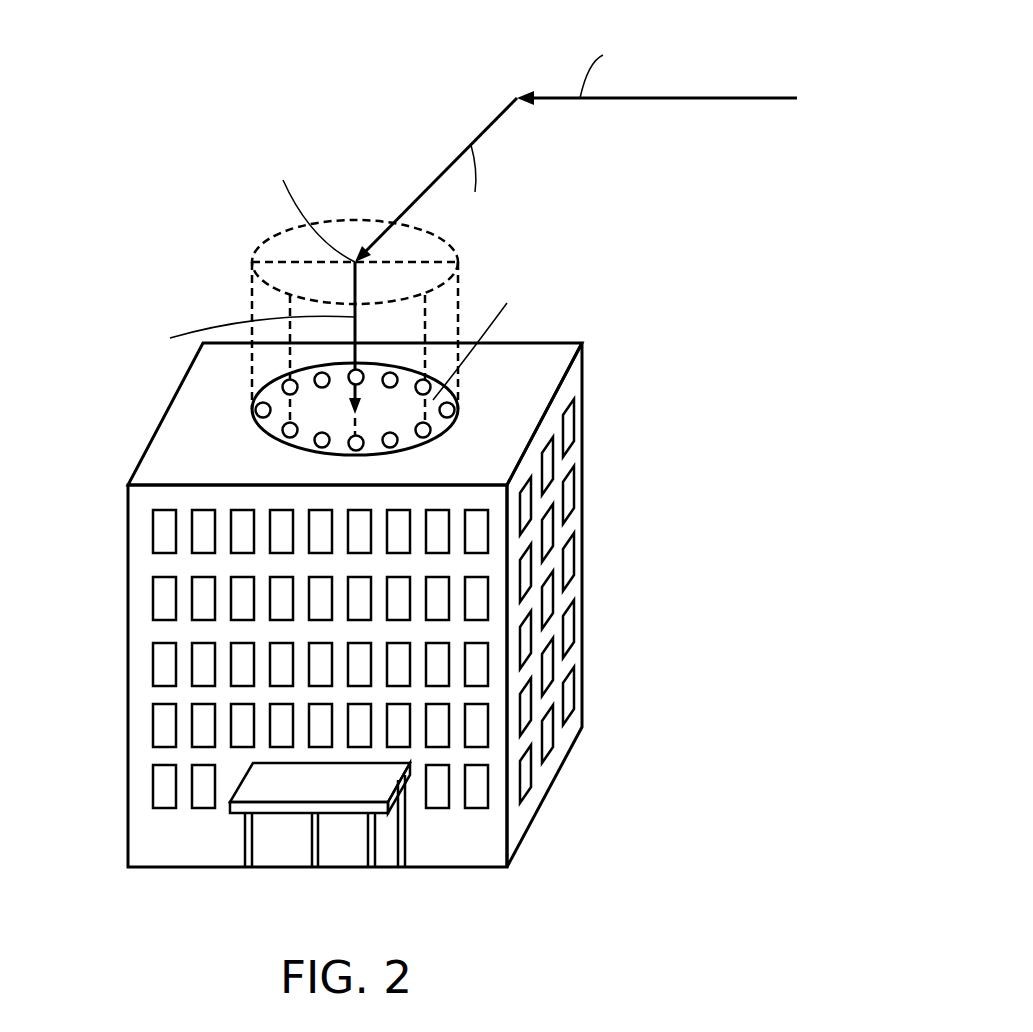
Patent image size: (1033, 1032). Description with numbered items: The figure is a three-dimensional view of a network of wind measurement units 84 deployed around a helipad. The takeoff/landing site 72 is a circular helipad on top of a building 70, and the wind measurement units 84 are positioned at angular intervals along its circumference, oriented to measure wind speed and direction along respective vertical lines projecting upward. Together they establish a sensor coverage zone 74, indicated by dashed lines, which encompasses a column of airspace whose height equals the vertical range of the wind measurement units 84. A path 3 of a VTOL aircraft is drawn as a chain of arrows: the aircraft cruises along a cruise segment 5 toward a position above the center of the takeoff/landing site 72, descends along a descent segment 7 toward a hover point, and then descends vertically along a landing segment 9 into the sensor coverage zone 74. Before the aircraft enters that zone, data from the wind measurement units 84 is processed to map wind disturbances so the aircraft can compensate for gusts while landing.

The path 3 is at (695, 113).
The cruise segment 5 is at (740, 98).
The descent segment 7 is at (498, 113).
The landing segment 9 is at (357, 335).
The building 70 is at (587, 501).
The takeoff/landing site 72 is at (252, 412).
The sensor coverage zone 74 is at (248, 305).
The wind measurement units 84 is at (458, 407).